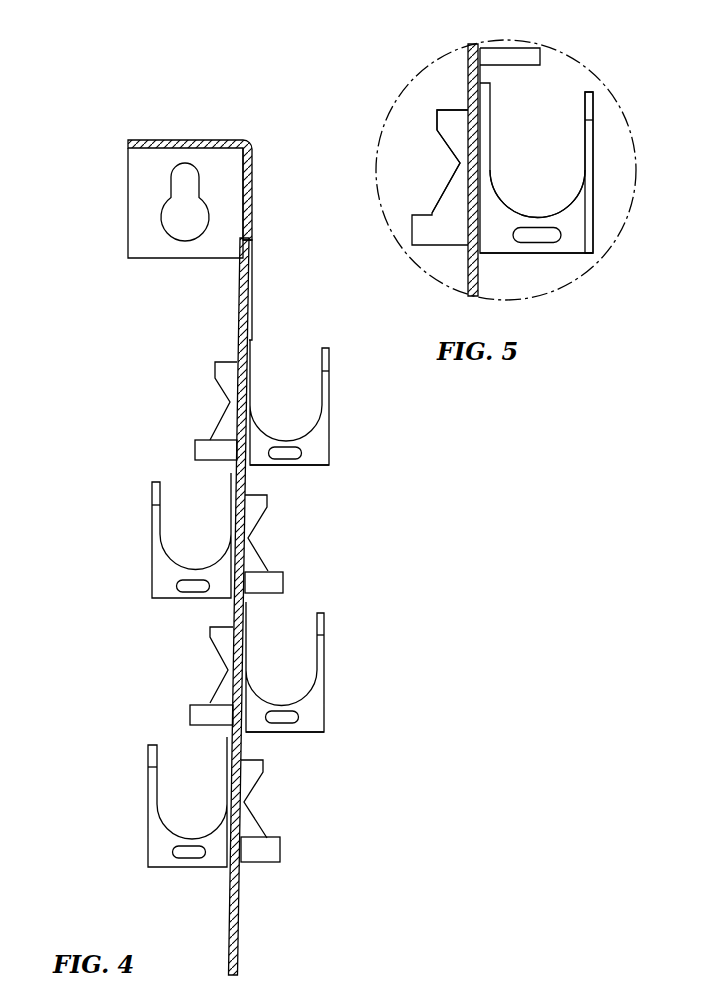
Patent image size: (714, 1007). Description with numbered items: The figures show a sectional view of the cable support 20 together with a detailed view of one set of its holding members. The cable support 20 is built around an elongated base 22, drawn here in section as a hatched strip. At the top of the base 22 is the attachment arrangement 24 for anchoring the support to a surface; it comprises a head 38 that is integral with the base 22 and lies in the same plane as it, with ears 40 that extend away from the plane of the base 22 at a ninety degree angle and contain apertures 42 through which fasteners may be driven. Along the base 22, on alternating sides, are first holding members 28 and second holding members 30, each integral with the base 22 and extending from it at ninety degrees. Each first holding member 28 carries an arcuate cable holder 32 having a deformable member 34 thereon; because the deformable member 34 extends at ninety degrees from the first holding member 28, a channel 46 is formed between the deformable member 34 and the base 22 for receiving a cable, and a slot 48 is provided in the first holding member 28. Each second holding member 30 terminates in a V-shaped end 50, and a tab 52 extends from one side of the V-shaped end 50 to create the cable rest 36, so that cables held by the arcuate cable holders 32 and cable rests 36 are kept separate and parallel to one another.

In FIG. 4, the cable support 20 is at (126, 537).
In FIG. 4, the base 22 is at (250, 288).
In FIG. 4, the attachment arrangement 24 is at (95, 192).
In FIG. 4, the first holding member 28 is at (312, 462).
In FIG. 5, the first holding member 28 is at (583, 235).
In FIG. 4, the second holding member 30 is at (236, 649).
In FIG. 5, the second holding member 30 is at (445, 103).
In FIG. 4, the arcuate cable holder 32 is at (307, 688).
In FIG. 5, the arcuate cable holder 32 is at (493, 175).
In FIG. 5, the deformable member 34 is at (594, 108).
In FIG. 4, the cable rest 36 is at (267, 533).
In FIG. 5, the cable rest 36 is at (452, 165).
In FIG. 4, the head 38 is at (247, 183).
In FIG. 4, the ears 40 is at (143, 140).
In FIG. 4, the apertures 42 is at (186, 176).
In FIG. 4, the channel 46 is at (290, 378).
In FIG. 5, the channel 46 is at (567, 98).
In FIG. 4, the slot 48 is at (285, 459).
In FIG. 5, the slot 48 is at (539, 240).
In FIG. 4, the V-shaped end 50 is at (227, 401).
In FIG. 5, the V-shaped end 50 is at (440, 133).
In FIG. 4, the tab 52 is at (197, 443).
In FIG. 5, the tab 52 is at (417, 227).